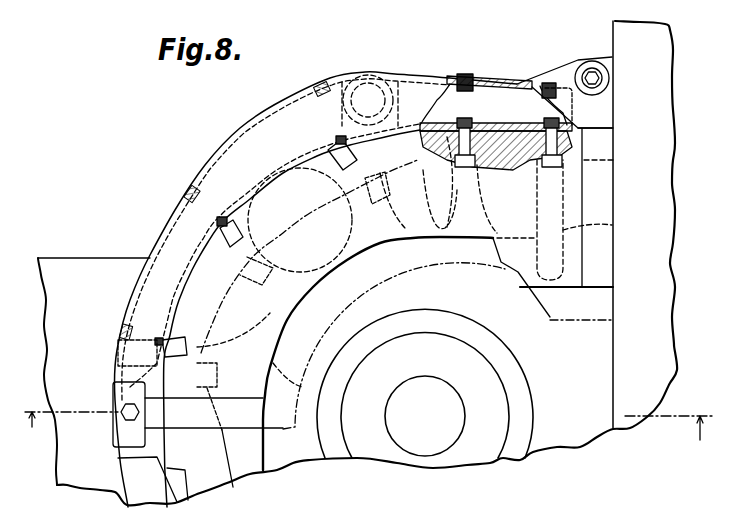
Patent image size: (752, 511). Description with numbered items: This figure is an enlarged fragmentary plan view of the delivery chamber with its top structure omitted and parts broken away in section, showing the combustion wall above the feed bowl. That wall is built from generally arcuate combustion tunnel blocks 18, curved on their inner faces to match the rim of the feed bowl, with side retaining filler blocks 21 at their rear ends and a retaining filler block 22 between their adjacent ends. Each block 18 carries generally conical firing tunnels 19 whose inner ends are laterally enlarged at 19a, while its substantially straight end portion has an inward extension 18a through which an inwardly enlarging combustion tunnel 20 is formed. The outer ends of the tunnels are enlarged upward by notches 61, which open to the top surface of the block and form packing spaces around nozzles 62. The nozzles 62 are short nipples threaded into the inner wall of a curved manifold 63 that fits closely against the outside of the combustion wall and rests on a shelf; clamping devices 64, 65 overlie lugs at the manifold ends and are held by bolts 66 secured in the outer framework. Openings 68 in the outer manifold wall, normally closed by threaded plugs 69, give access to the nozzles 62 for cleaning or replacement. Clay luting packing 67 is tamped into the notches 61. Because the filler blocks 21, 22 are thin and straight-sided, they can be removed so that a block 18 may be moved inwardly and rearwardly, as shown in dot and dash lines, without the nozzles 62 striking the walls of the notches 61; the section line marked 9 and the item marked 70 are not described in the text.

The section line 9- 9 is at (365, 431).
The combustion tunnel block 18 is at (266, 206).
The inward extension 18a is at (510, 262).
The combustion tunnel 19 is at (455, 190).
The laterally enlarged inner end 19a is at (393, 249).
The combustion tunnel 20 is at (612, 226).
The side retaining filler block 21 is at (603, 192).
The retaining filler block 22 is at (233, 487).
The notch 61 is at (328, 167).
The nozzle 62 is at (330, 145).
The manifold 63 is at (497, 80).
The clamping device 64 is at (113, 402).
The clamping device 65 is at (580, 66).
The bolt 66 is at (593, 68).
The packing 67 is at (452, 124).
The opening 68 is at (337, 78).
The threaded plug 69 is at (318, 87).
The ring 70 is at (400, 78).